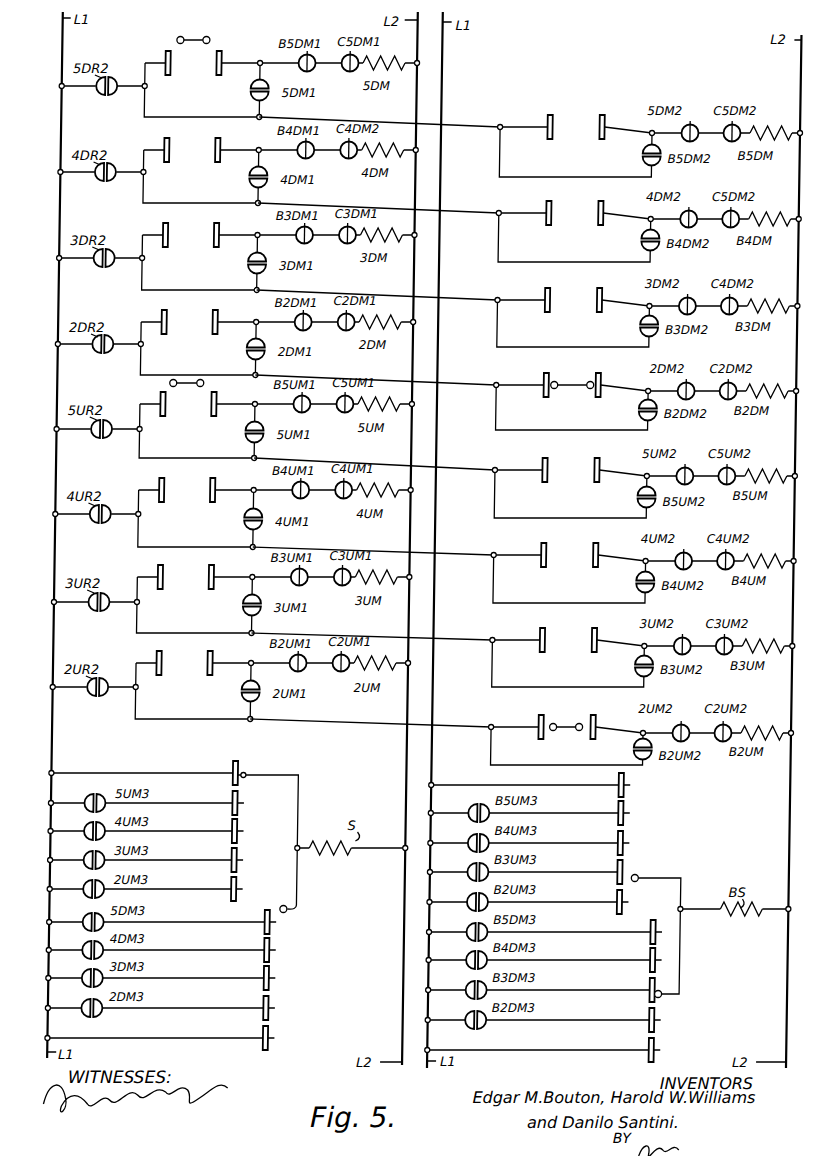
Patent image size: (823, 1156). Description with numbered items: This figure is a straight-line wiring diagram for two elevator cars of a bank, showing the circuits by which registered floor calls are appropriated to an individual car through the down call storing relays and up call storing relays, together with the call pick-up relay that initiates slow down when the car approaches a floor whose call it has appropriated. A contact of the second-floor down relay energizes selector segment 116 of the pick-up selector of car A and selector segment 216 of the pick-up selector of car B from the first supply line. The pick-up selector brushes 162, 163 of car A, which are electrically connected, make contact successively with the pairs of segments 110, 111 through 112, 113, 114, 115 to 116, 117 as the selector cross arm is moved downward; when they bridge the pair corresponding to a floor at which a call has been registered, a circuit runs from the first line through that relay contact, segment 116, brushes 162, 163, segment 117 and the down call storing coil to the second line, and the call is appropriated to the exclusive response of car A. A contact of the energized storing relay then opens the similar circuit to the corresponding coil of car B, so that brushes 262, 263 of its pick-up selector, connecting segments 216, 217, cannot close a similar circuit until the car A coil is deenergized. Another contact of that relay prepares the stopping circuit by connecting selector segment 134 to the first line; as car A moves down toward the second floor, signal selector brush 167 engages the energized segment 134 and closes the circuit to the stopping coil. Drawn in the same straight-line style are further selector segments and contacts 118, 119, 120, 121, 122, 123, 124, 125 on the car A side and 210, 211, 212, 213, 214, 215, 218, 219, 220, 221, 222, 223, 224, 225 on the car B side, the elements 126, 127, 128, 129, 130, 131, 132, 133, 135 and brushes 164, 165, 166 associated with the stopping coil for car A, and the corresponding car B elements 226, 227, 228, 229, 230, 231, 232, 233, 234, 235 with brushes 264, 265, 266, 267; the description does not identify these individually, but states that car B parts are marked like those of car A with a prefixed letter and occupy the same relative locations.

The selector segment 110 is at (171, 54).
The selector segment 111 is at (222, 52).
The selector segment 112 is at (171, 141).
The selector segment 113 is at (222, 139).
The selector segment 114 is at (171, 226).
The selector segment 115 is at (222, 224).
The selector segment 116 is at (171, 313).
The selector segment 117 is at (222, 311).
The contact 118 is at (166, 396).
The contact 119 is at (224, 396).
The contact 120 is at (171, 481).
The contact 121 is at (222, 479).
The contact 122 is at (171, 568).
The contact 123 is at (222, 566).
The contact 124 is at (171, 654).
The contact 125 is at (222, 652).
The contact 126 is at (244, 768).
The contact 127 is at (251, 808).
The contact 128 is at (251, 836).
The contact 129 is at (251, 865).
The contact 130 is at (251, 894).
The contact 131 is at (285, 926).
The contact 132 is at (285, 954).
The contact 133 is at (285, 982).
The selector segment 134 is at (285, 1012).
The contact 135 is at (285, 1042).
The pick-up selector brush 162 is at (178, 37).
The pick-up selector brush 163 is at (209, 37).
The switch contact 164 is at (175, 384).
The switch contact 165 is at (210, 384).
The switch contact 166 is at (258, 774).
The signal selector brush 167 is at (301, 911).
The contact 210 is at (554, 117).
The contact 211 is at (606, 117).
The contact 212 is at (554, 203).
The contact 213 is at (606, 203).
The contact 214 is at (554, 290).
The contact 215 is at (606, 290).
The selector segment 216 is at (549, 380).
The selector segment 217 is at (609, 380).
The contact 218 is at (552, 458).
The contact 219 is at (605, 458).
The contact 220 is at (552, 543).
The contact 221 is at (605, 543).
The contact 222 is at (552, 628).
The contact 223 is at (605, 628).
The contact 224 is at (549, 722).
The contact 225 is at (607, 715).
The contact 226 is at (638, 786).
The contact 227 is at (638, 814).
The contact 228 is at (638, 844).
The contact 229 is at (638, 870).
The contact 230 is at (638, 902).
The contact 231 is at (664, 932).
The contact 232 is at (664, 960).
The contact 233 is at (664, 989).
The contact 234 is at (664, 1021).
The contact 235 is at (664, 1051).
The pick-up selector brush 262 is at (561, 381).
The pick-up selector brush 263 is at (598, 381).
The switch contact 264 is at (563, 723).
The switch contact 265 is at (591, 723).
The switch contact 266 is at (653, 877).
The switch contact 267 is at (676, 998).